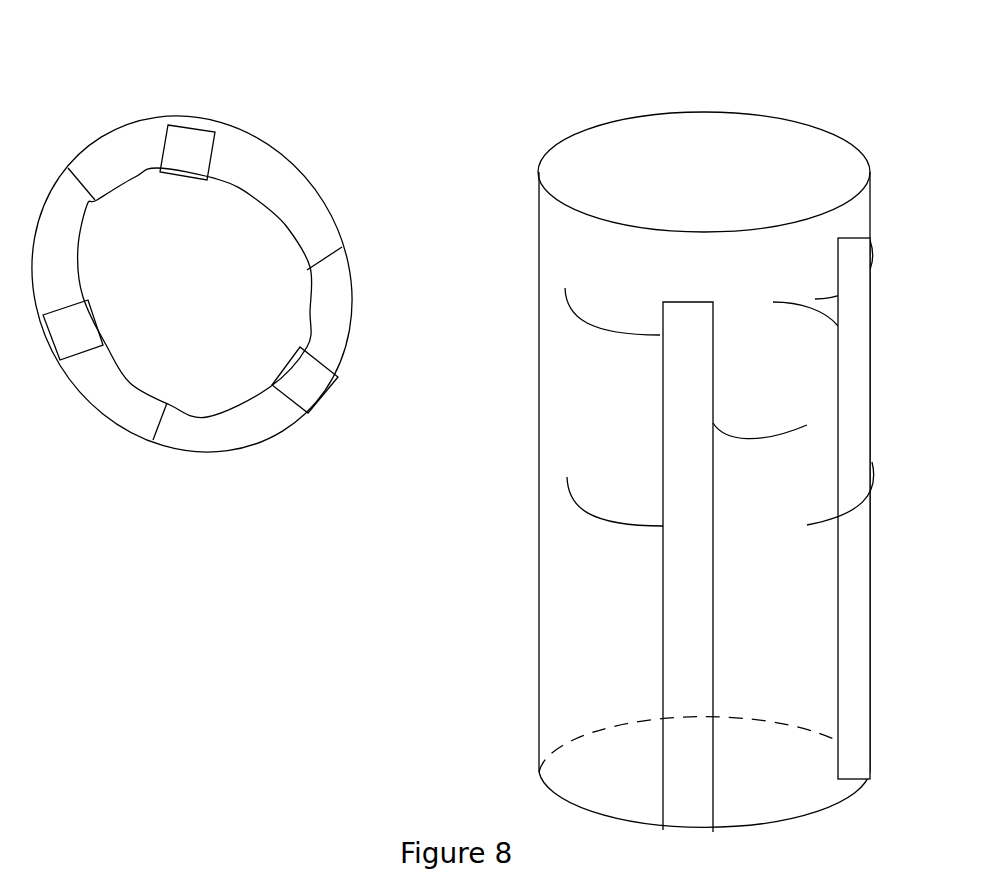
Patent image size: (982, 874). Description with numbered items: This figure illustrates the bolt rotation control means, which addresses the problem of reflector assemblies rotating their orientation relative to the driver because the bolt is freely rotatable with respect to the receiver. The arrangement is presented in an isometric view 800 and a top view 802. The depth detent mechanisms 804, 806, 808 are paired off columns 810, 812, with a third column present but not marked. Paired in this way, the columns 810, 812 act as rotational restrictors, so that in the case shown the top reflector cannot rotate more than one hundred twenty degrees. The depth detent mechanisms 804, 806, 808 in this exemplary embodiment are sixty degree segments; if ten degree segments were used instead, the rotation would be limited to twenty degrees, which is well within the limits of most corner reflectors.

The isometric view 800 is at (500, 668).
The top view 802 is at (88, 445).
The depth detent mechanism 804 is at (742, 437).
The depth detent mechanism 806 is at (820, 298).
The depth detent mechanism 808 is at (593, 327).
The column 810 is at (678, 486).
The column 812 is at (838, 253).